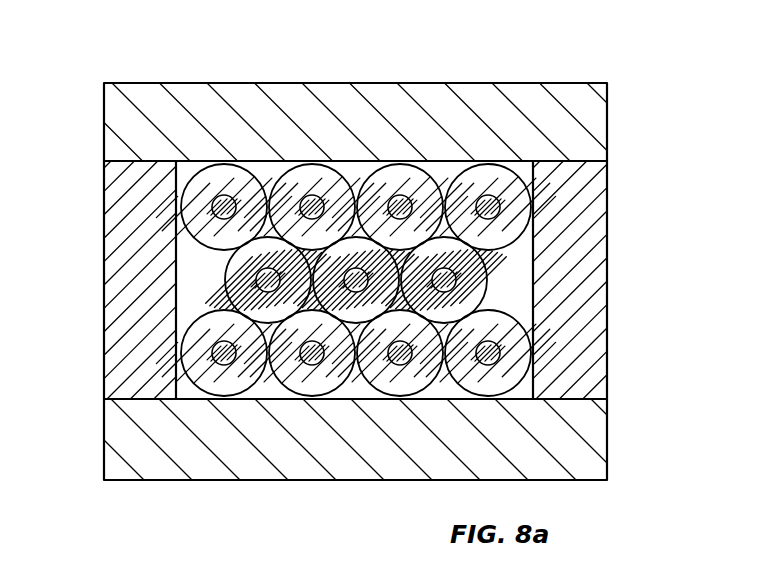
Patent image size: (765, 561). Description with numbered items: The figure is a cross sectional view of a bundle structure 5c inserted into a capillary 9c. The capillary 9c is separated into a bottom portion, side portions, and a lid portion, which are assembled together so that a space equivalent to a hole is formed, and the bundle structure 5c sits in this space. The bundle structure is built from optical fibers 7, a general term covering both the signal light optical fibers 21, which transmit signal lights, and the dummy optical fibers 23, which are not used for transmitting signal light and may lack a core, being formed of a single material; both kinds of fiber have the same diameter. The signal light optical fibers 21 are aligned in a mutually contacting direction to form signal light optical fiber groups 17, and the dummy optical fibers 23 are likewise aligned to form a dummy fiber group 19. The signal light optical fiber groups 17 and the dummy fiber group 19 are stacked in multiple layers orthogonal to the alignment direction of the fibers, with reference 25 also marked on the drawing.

The bundle structure 5c is at (597, 73).
The optical fiber 7 is at (277, 500).
The capillary 9c is at (598, 427).
The signal light optical fiber group 17 is at (612, 232).
The dummy fiber group 19 is at (612, 307).
The signal light optical fiber 21 is at (225, 312).
The dummy optical fiber 23 is at (232, 357).
The insulated wire 25 is at (216, 199).